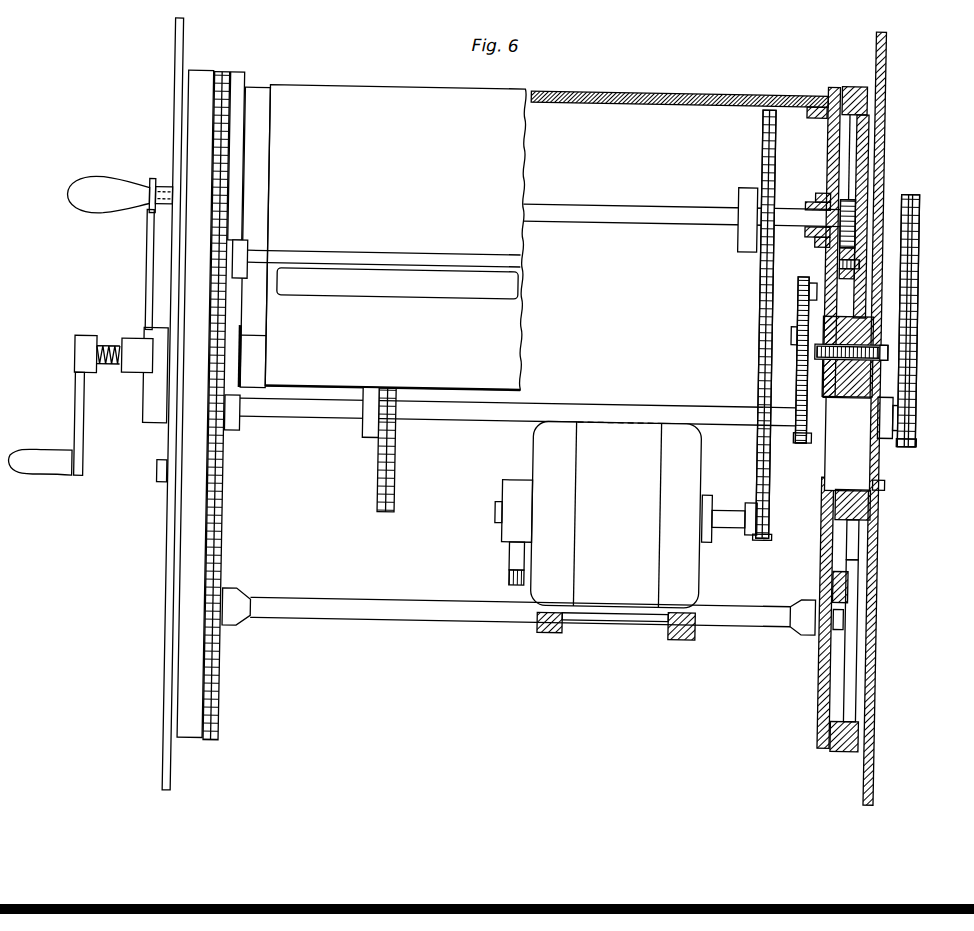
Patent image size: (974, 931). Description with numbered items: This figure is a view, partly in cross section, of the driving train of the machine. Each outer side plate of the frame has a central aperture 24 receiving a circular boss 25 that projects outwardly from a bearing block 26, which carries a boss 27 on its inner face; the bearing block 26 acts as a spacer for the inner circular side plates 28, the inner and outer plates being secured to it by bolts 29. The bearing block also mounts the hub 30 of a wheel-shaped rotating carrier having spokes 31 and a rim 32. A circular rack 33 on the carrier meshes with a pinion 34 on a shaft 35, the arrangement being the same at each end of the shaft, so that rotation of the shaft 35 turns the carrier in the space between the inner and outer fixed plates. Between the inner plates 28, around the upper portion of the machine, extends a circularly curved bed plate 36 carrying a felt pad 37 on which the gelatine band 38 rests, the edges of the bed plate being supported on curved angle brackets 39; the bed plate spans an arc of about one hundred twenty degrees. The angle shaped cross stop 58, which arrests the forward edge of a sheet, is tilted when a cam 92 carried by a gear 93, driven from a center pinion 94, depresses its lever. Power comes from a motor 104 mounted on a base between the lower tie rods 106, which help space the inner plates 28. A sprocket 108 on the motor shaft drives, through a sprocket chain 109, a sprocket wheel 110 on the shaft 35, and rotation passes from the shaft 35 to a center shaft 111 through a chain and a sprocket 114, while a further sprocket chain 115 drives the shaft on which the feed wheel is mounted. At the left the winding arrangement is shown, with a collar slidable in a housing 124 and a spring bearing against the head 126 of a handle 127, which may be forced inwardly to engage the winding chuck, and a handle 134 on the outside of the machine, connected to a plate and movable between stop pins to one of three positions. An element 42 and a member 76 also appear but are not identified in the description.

The central aperture 24 is at (870, 467).
The circular boss 25 is at (875, 449).
The bearing block 26 is at (846, 452).
The boss 27 is at (829, 467).
The inner circular side plates 28 is at (224, 496).
The bolts 29 is at (819, 353).
The hub 30 is at (860, 524).
The spokes 31 is at (857, 632).
The rim 32 is at (202, 548).
The circular rack 33 is at (837, 265).
The pinion 34 is at (844, 194).
The shaft 35 is at (612, 210).
The bed plate 36 is at (229, 80).
The felt pad 37 is at (247, 96).
The gelatine band 38 is at (286, 89).
The curved angle brackets 39 is at (815, 112).
The hub 42 is at (254, 354).
The angle shaped cross stop 58 is at (443, 268).
The bracket 76 is at (829, 82).
The cam 92 is at (810, 275).
The gear 93 is at (767, 369).
The center pinion 94 is at (796, 371).
The motor 104 is at (603, 531).
The lower tie rods 106 is at (388, 612).
The sprocket 108 is at (762, 541).
The sprocket chain 109 is at (736, 324).
The sprocket wheel 110 is at (764, 149).
The center shaft 111 is at (567, 402).
The sprocket 114 is at (376, 433).
The sprocket chain 115 is at (906, 312).
The housing 124 is at (134, 375).
The head 126 is at (87, 348).
The handle 127 is at (75, 412).
The handle 134 is at (145, 273).